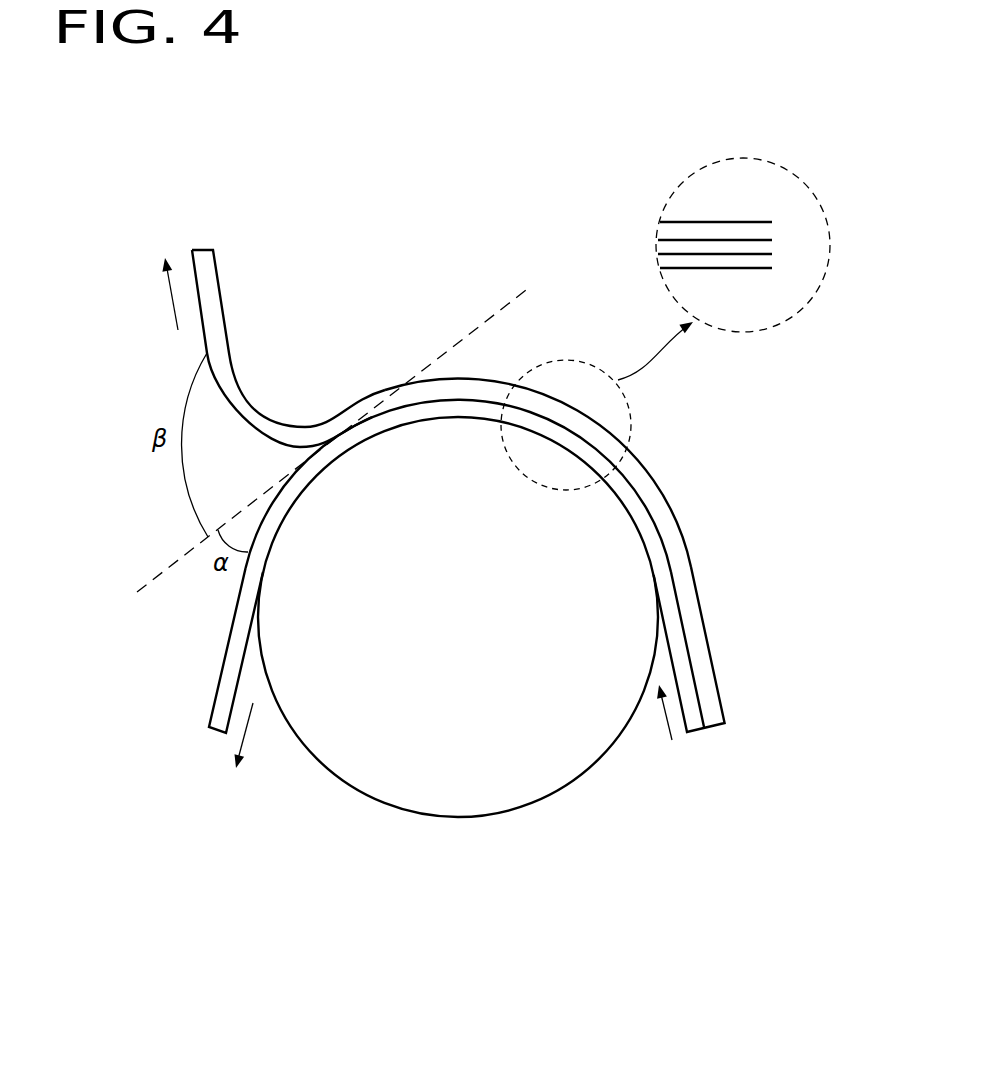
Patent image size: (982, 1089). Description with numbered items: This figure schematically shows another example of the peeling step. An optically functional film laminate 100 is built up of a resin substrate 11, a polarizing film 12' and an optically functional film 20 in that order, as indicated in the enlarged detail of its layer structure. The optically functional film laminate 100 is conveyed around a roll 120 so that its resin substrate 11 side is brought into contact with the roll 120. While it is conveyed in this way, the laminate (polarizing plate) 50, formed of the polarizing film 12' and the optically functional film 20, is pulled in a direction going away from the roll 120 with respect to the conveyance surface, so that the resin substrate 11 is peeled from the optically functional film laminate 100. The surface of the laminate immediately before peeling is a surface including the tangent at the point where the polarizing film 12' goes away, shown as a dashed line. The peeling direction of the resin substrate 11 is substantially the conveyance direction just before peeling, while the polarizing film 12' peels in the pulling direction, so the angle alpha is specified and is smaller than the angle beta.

The resin substrate 11 is at (220, 708).
The polarizing film 12' is at (740, 240).
The optically functional film 20 is at (722, 226).
The laminate (polarizing plate) 50 is at (207, 300).
The optically functional film laminate 100 is at (728, 669).
The roll 120 is at (443, 783).